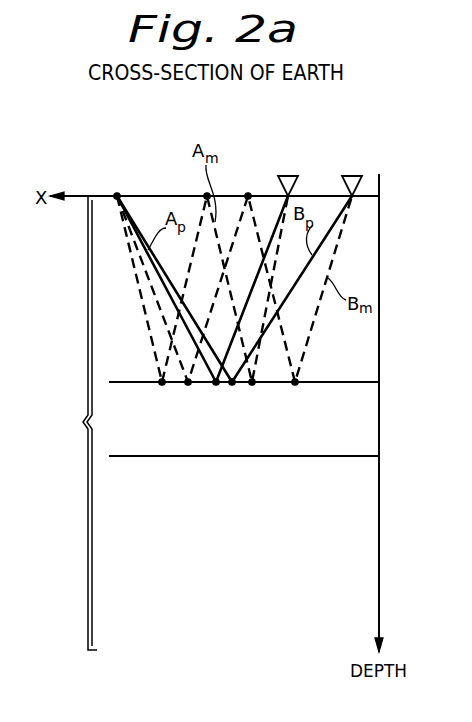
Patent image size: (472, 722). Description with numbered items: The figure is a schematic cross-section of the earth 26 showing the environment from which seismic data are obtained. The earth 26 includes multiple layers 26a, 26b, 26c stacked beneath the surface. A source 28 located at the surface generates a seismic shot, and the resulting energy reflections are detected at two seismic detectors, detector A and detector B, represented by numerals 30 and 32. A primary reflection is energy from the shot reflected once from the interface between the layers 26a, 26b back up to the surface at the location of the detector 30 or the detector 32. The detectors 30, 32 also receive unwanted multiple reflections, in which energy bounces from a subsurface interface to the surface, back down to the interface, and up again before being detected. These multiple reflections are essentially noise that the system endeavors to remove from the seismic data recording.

The earth 26 is at (74, 423).
The first layer 26a is at (362, 369).
The second layer 26b is at (359, 429).
The third layer 26c is at (355, 566).
The source 28 is at (117, 194).
The seismic detector A 30 is at (288, 175).
The seismic detector B 32 is at (352, 175).